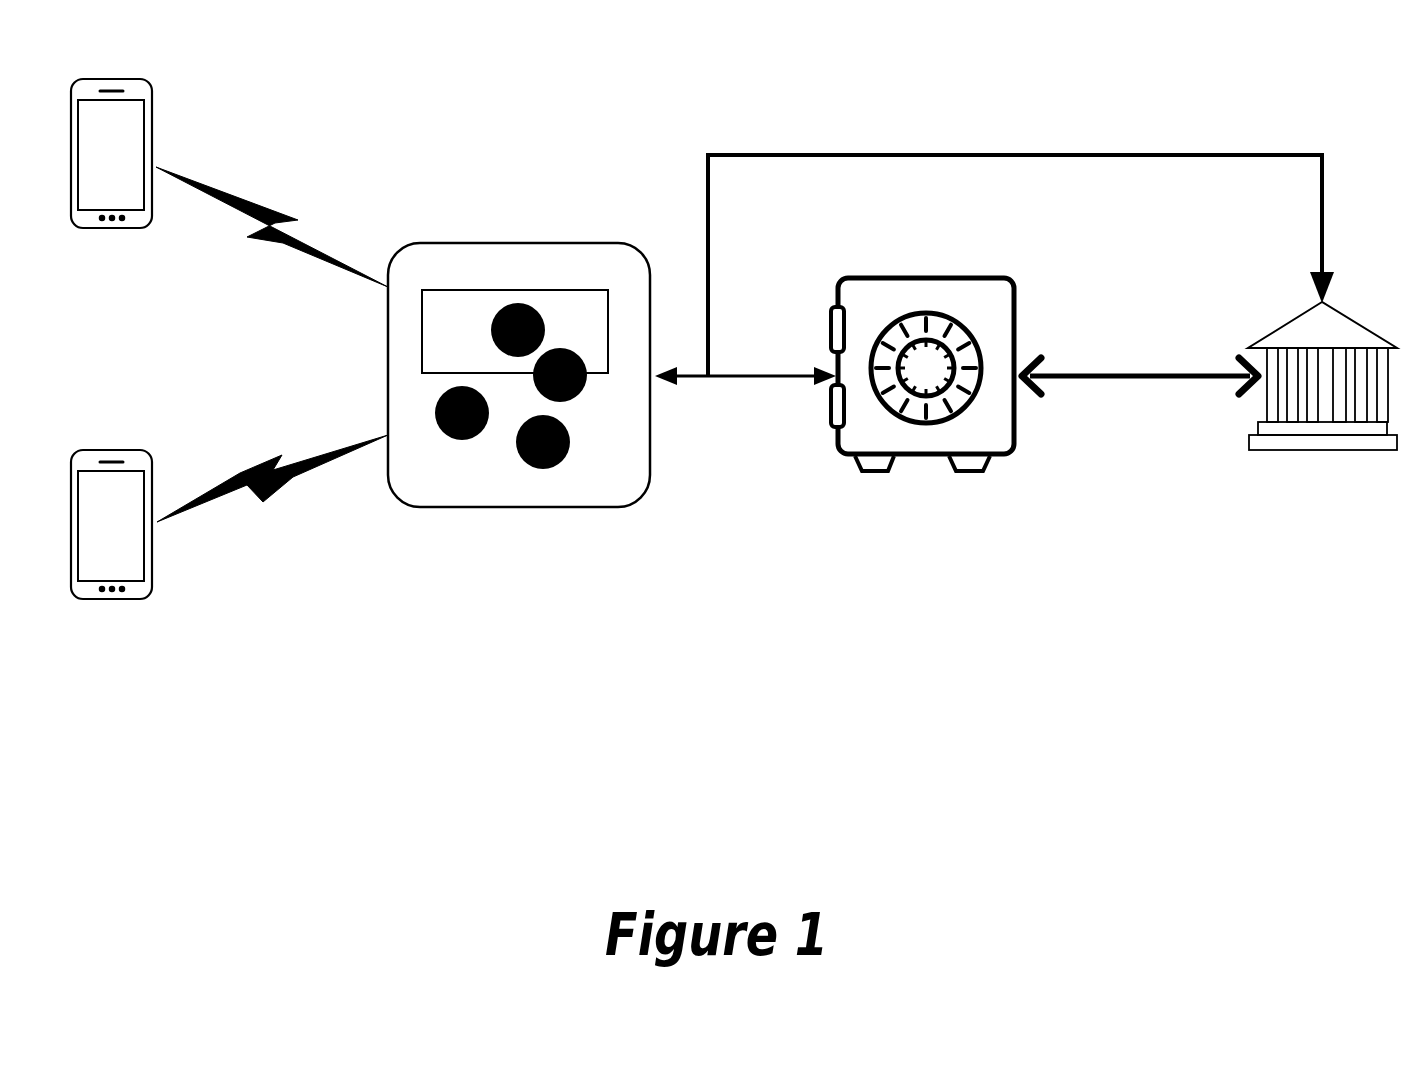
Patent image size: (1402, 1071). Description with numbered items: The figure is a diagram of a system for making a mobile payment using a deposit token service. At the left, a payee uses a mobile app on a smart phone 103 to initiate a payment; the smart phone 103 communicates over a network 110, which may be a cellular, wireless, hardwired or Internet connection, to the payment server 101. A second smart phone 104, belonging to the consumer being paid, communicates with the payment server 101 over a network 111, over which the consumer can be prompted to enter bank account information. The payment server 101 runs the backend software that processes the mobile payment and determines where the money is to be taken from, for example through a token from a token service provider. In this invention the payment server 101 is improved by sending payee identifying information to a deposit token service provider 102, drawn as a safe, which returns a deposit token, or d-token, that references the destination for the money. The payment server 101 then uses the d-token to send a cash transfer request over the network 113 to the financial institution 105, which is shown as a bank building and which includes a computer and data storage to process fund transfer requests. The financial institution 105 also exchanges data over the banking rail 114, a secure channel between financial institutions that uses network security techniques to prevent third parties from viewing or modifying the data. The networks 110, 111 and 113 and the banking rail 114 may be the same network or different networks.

The payment server 101 is at (519, 390).
The deposit token service provider 102 is at (922, 408).
The smart phone 103 is at (111, 169).
The smart phone 104 is at (111, 539).
The financial institution 105 is at (1322, 392).
The network 110 is at (272, 227).
The network 111 is at (272, 483).
The network 113 is at (994, 265).
The banking rail 114 is at (1140, 376).